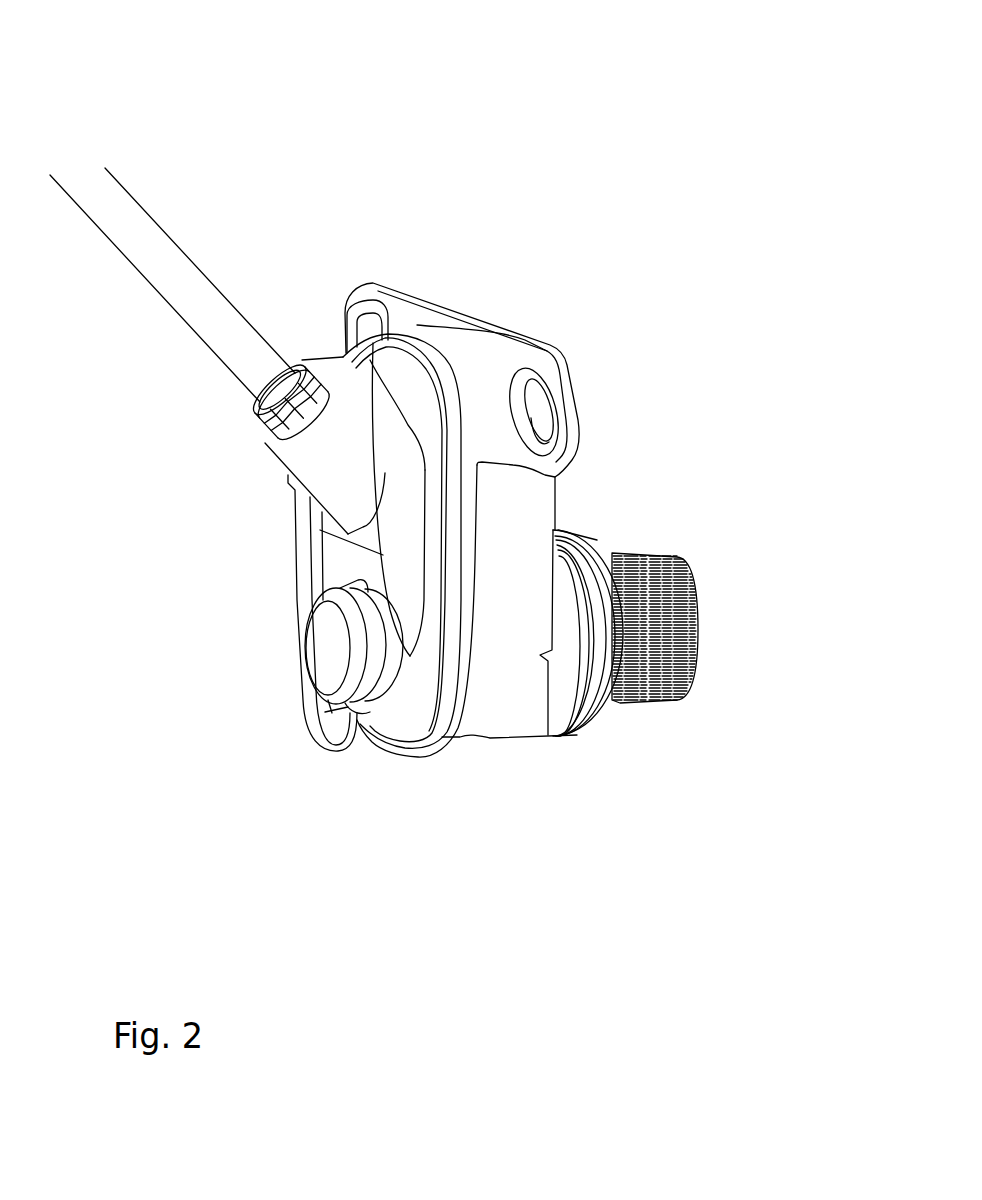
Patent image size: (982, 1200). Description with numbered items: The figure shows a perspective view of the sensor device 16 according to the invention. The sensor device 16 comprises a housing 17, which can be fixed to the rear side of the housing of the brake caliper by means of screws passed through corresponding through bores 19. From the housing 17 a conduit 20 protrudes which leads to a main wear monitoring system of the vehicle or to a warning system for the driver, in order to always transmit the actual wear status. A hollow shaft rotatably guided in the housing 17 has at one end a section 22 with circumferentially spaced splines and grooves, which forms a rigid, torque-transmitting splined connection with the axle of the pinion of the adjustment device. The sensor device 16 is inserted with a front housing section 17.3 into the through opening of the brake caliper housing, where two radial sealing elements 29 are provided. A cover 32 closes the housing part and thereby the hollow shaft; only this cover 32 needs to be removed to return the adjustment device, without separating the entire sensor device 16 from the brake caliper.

The sensor device 16 is at (483, 173).
The housing 17 is at (462, 720).
The front housing section 17.3 is at (538, 728).
The through bores 19 is at (540, 407).
The conduit 20 is at (162, 265).
The section 22 is at (644, 549).
The radial sealing elements 29 is at (583, 732).
The cover 32 is at (327, 660).